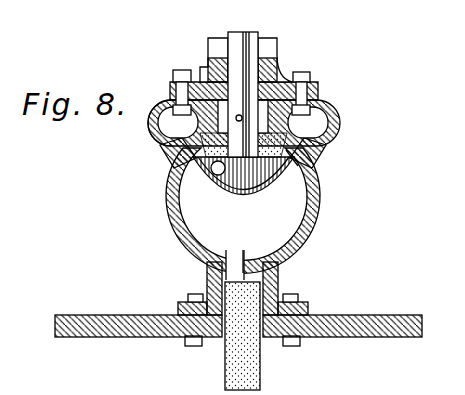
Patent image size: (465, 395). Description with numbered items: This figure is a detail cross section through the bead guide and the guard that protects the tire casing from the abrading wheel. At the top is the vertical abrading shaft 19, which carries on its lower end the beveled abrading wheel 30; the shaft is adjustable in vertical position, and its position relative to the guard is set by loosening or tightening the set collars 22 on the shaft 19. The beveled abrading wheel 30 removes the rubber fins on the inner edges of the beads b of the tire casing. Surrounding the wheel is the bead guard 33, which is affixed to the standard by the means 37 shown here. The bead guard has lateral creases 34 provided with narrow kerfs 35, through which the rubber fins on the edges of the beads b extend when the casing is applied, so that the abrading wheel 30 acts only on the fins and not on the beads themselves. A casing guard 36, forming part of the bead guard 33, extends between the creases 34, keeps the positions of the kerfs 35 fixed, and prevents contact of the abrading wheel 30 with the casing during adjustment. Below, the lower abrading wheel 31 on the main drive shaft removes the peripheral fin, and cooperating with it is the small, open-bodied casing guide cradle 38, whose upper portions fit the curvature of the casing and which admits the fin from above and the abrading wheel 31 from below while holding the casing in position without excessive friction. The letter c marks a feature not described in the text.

The vertical abrading shaft 19 is at (247, 31).
The set collars 22 is at (208, 66).
The means 37 is at (303, 72).
The bead guard 33 is at (333, 123).
The narrow kerfs 35 is at (148, 120).
The lateral creases 34 is at (197, 136).
The beveled abrading wheel 30 is at (316, 190).
The casing guard 36 is at (224, 190).
The casing guide cradle 38 is at (207, 280).
The abrading wheel 31 is at (232, 365).
The beads b is at (167, 162).
The passage c is at (243, 256).